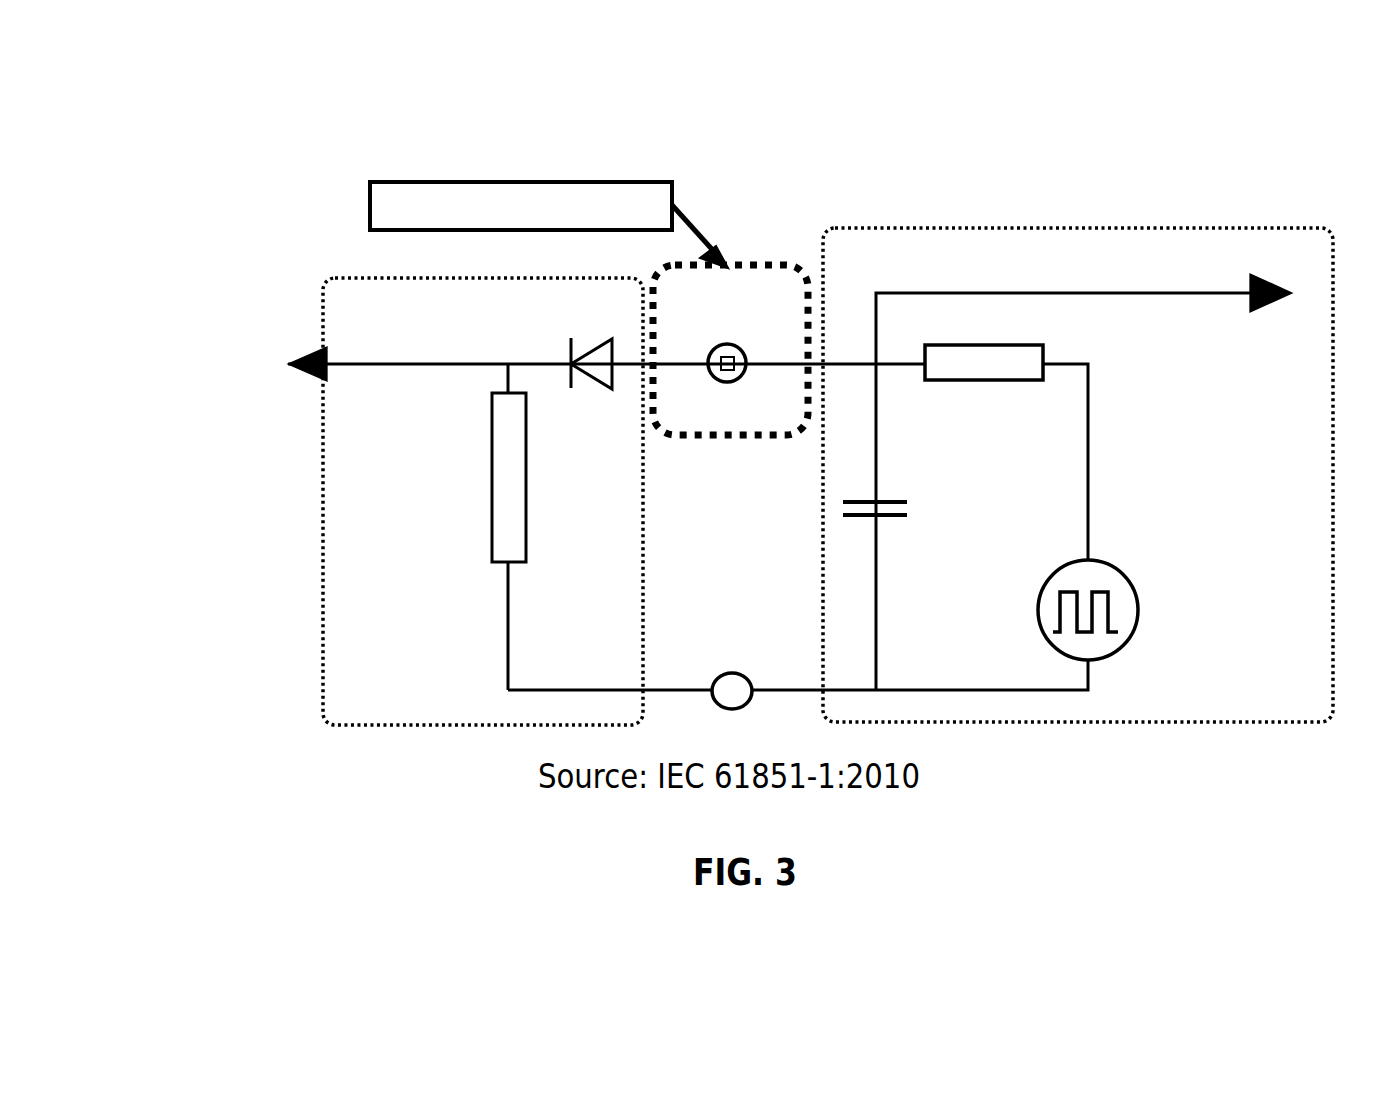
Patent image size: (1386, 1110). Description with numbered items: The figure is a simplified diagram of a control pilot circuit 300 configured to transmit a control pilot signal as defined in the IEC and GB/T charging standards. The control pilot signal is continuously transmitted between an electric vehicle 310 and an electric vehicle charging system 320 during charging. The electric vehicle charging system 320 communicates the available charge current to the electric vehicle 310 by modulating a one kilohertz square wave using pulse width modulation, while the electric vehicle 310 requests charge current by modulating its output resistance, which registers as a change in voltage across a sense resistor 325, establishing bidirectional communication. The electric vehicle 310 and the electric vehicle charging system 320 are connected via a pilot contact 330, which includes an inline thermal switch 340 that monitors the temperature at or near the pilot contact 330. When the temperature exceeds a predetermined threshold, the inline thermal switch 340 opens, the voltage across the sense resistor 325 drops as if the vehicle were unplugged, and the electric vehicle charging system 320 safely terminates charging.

The control pilot circuit 300 is at (285, 79).
The electric vehicle 310 is at (320, 300).
The electric vehicle charging system 320 is at (1143, 225).
The sense resistor 325 is at (1013, 415).
The pilot contact 330 is at (716, 382).
The inline thermal switch 340 is at (731, 370).